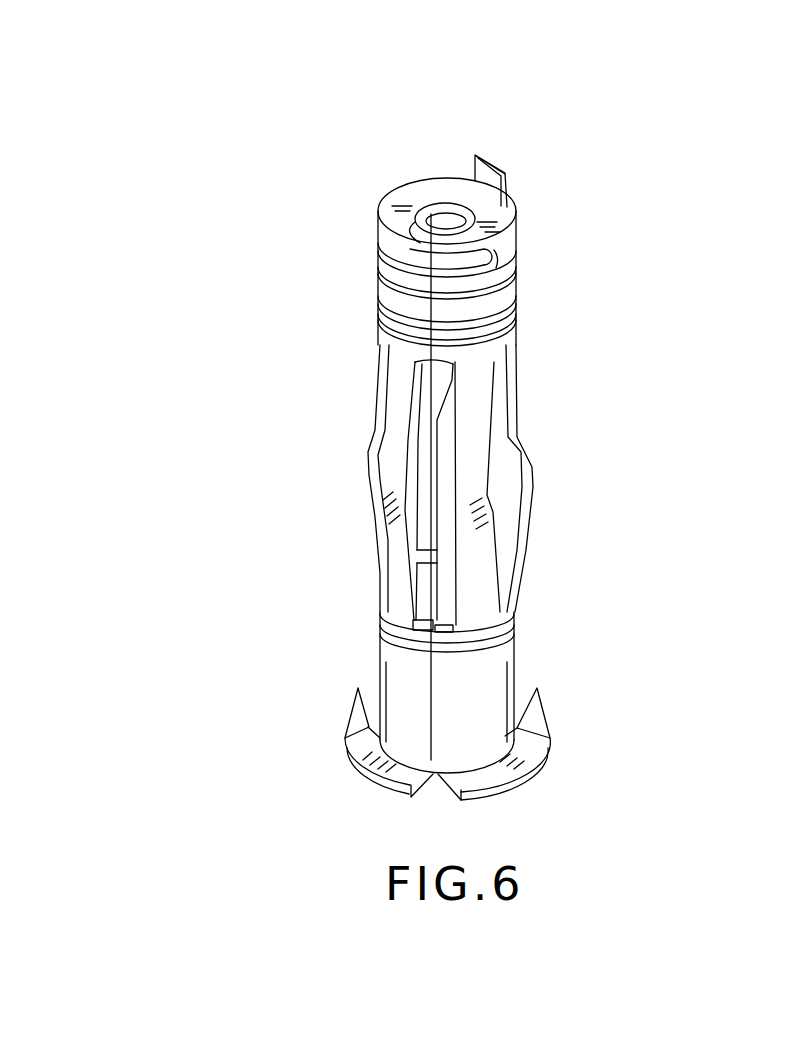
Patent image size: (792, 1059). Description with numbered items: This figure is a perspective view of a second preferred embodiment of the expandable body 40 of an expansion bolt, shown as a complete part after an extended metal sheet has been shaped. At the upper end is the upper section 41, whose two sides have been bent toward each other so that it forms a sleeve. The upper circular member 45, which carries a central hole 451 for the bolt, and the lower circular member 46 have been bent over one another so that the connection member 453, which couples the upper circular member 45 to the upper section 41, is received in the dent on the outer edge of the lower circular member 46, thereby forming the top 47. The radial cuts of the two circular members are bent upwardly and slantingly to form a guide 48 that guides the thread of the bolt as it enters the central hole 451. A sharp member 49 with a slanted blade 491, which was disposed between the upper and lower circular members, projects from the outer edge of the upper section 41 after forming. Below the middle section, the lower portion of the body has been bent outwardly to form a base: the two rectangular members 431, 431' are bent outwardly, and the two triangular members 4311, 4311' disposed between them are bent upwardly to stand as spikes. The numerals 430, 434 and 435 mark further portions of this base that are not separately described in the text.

The expandable body 40 is at (318, 406).
The upper section 41 is at (523, 302).
The upper circular member 45 is at (493, 225).
The central hole 451 is at (443, 210).
The lower circular member 46 is at (425, 270).
The top 47 is at (362, 252).
The guide 48 is at (412, 228).
The sharp member 49 is at (474, 177).
The slanted blade 491 is at (503, 168).
The connection member 453 is at (517, 267).
The flange 430 is at (558, 754).
The rectangular member 431 is at (536, 807).
The rectangular member 431' is at (326, 814).
The flange rim 434 is at (540, 767).
The flange portion 435 is at (352, 760).
The triangular member 4311 is at (582, 675).
The triangular member 4311' is at (271, 700).